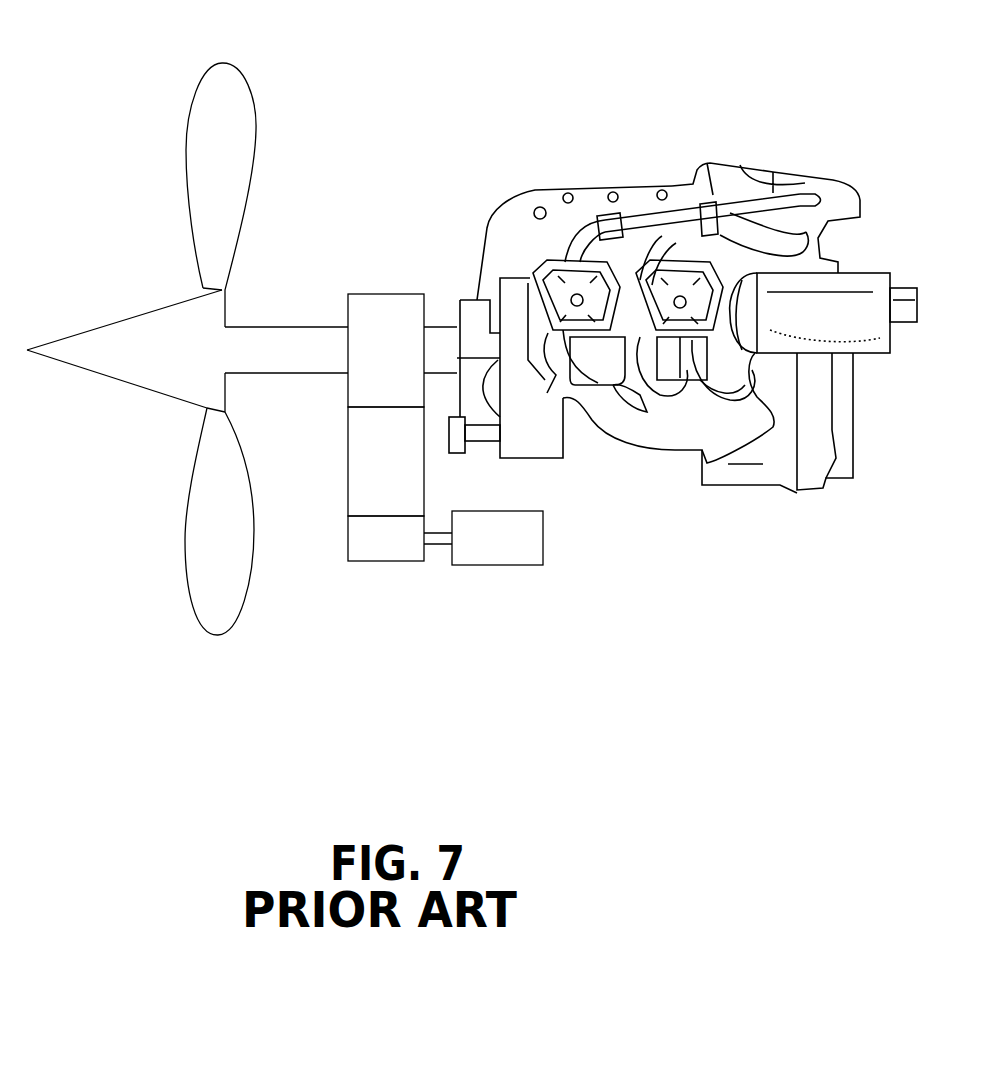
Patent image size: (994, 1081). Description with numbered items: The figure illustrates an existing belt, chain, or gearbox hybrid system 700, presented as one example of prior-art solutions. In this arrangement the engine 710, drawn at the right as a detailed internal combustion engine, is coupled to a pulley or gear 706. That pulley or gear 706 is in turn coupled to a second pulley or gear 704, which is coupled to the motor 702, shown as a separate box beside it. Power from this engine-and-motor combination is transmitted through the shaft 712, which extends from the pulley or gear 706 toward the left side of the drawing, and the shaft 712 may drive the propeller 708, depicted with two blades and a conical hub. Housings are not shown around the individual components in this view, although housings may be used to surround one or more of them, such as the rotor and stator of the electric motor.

The belt, chain, or gearbox hybrid system 700 is at (497, 70).
The motor 702 is at (483, 538).
The pulley or gear 704 is at (386, 538).
The pulley or gear 706 is at (386, 350).
The propeller 708 is at (201, 113).
The engine 710 is at (673, 187).
The shaft 712 is at (311, 368).